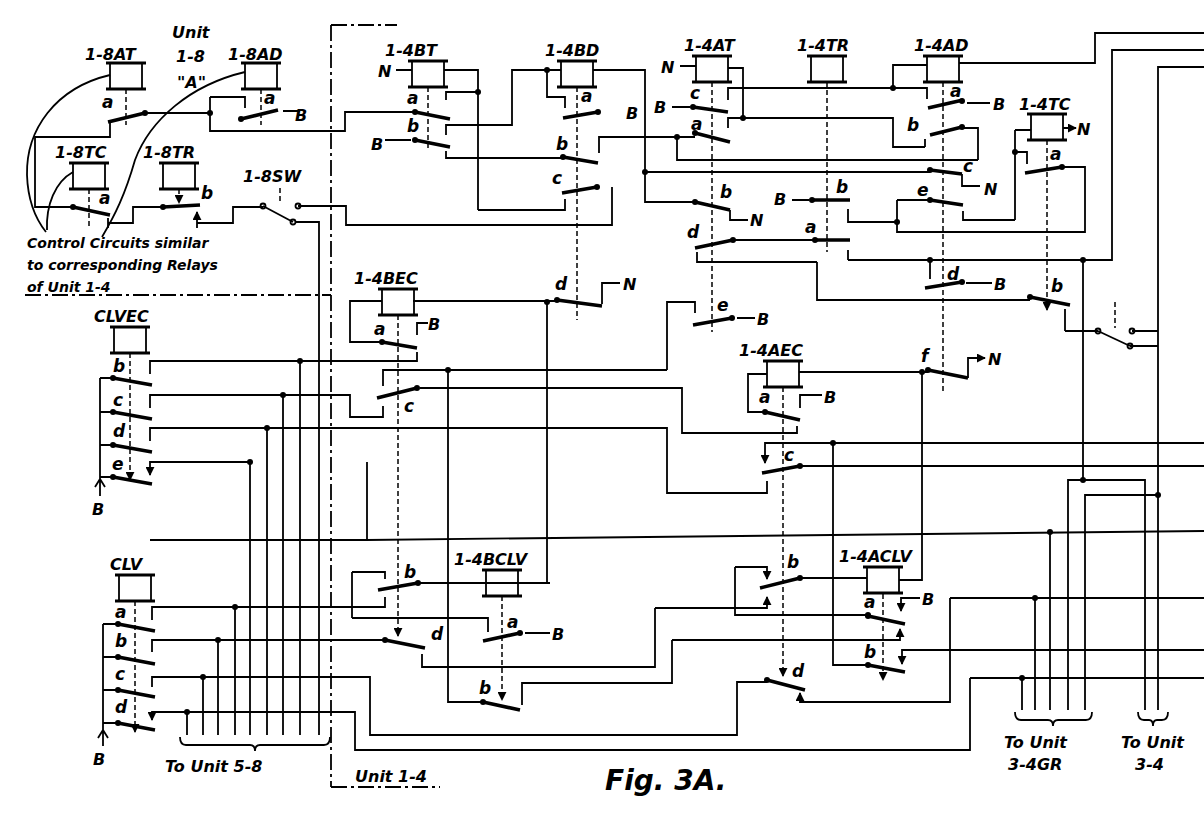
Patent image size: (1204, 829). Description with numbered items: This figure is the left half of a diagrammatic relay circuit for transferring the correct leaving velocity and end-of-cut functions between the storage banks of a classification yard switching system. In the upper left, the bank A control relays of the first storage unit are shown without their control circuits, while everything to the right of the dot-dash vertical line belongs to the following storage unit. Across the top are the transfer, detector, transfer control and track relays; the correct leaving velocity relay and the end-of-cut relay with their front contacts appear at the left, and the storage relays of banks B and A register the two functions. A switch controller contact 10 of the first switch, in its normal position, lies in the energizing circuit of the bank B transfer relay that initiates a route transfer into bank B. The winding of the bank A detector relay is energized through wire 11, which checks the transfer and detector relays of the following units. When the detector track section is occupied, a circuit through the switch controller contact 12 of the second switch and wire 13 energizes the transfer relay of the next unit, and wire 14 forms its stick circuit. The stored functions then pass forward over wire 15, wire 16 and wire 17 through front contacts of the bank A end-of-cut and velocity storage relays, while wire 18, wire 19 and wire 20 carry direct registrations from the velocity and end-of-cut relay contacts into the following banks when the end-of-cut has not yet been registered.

The switch controller contact 10 is at (278, 212).
The wire 11 is at (1081, 37).
The switch controller contact 12 is at (1119, 330).
The wire 13 is at (1156, 82).
The wire 14 is at (1110, 82).
The wire 15 is at (984, 442).
The wire 16 is at (1002, 456).
The wire 17 is at (1053, 647).
The wire 18 is at (1077, 644).
The wire 19 is at (1087, 684).
The wire 20 is at (785, 611).